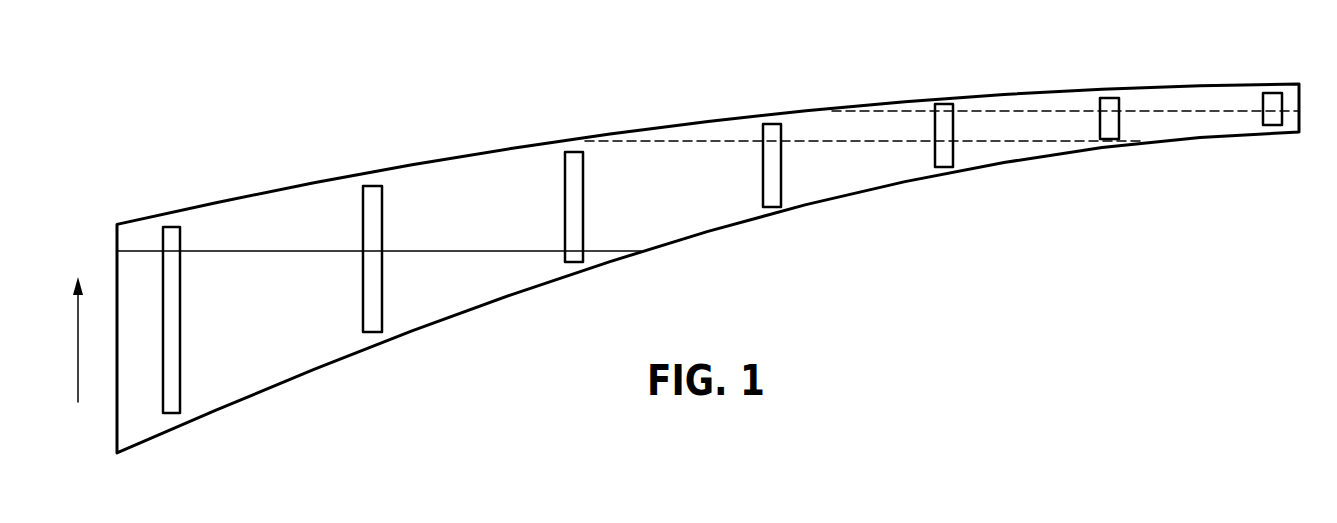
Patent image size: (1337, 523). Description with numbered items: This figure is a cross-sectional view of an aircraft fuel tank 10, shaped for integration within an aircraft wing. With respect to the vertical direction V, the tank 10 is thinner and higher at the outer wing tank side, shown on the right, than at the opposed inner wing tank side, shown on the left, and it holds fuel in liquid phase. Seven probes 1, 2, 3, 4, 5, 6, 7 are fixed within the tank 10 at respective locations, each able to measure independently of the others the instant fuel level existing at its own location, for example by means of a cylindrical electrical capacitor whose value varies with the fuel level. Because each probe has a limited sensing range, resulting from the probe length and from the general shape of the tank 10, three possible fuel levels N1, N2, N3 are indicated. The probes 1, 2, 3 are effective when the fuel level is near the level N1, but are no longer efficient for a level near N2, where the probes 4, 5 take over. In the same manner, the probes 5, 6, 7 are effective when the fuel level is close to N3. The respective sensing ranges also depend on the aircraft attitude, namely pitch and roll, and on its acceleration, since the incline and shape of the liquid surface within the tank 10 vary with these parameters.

The probe 1 is at (182, 395).
The probe 2 is at (382, 313).
The probe 3 is at (583, 240).
The probe 4 is at (782, 188).
The probe 5 is at (955, 148).
The probe 6 is at (1119, 125).
The probe 7 is at (1282, 115).
The fluid tank 10 is at (252, 193).
The fuel level N1 is at (131, 233).
The fuel level N2 is at (643, 123).
The fuel level N3 is at (902, 93).
The vertical direction V is at (70, 328).